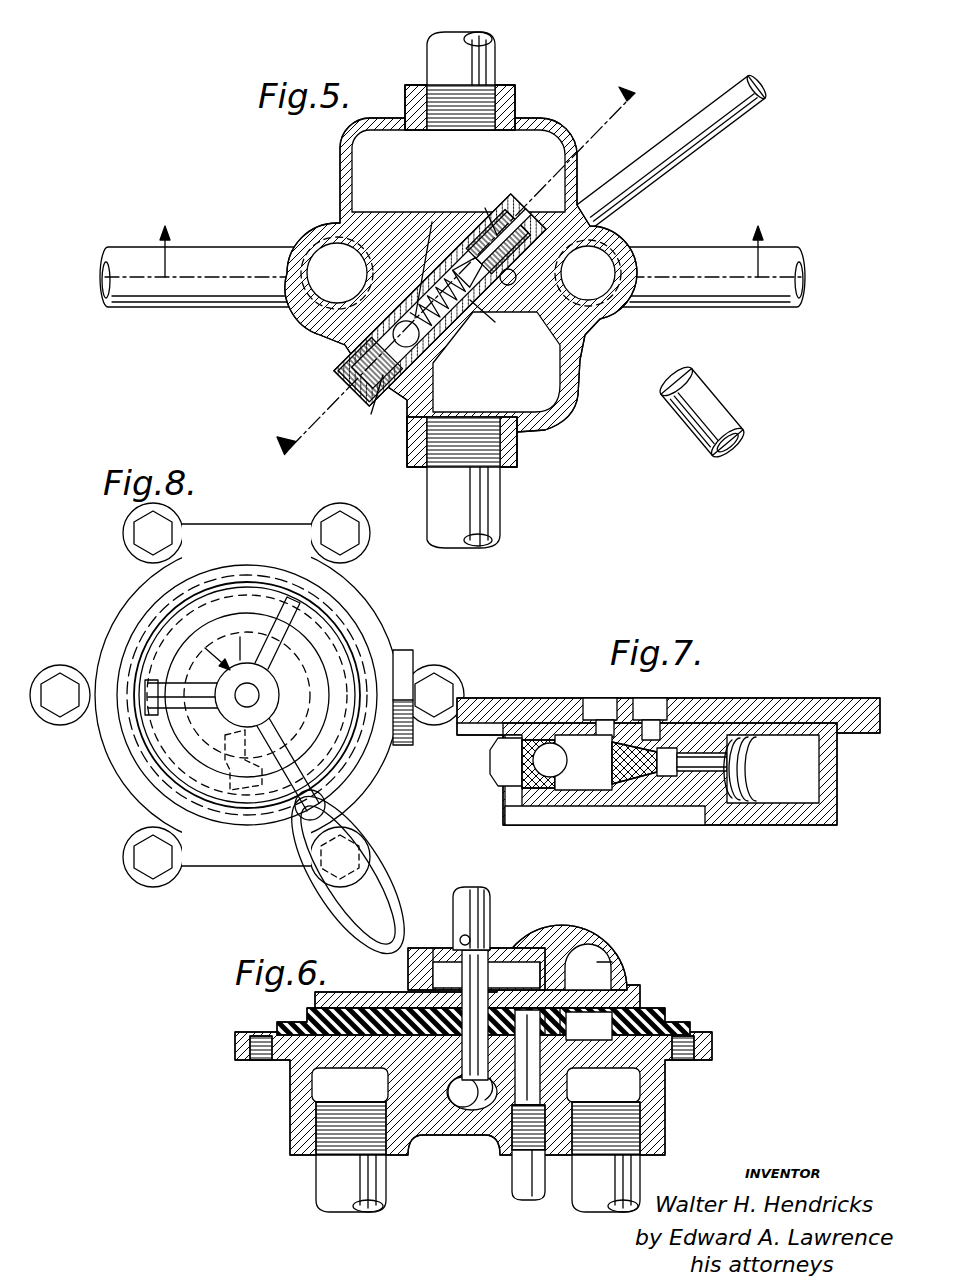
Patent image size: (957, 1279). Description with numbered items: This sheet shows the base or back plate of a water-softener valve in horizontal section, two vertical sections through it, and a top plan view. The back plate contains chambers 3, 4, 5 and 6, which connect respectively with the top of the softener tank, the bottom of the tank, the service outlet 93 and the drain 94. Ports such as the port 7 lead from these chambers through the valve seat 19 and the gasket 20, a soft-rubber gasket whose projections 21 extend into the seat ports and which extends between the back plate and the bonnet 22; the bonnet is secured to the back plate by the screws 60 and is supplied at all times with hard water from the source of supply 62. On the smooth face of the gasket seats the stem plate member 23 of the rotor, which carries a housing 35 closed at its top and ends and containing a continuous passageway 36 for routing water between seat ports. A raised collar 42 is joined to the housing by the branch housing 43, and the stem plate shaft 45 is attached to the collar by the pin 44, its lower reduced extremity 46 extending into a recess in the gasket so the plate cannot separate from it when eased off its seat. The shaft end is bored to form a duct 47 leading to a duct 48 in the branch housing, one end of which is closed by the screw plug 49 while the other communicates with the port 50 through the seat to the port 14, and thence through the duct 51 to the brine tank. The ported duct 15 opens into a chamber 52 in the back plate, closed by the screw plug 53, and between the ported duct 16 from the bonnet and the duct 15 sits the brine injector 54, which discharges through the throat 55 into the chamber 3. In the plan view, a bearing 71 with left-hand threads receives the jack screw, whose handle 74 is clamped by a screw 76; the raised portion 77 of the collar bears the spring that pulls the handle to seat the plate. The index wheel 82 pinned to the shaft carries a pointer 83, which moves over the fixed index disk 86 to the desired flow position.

In FIG. 5, the chamber 3 is at (458, 171).
In FIG. 7, the chamber 3 is at (771, 769).
In FIG. 5, the chamber 4 is at (530, 392).
In FIG. 5, the chamber 5 is at (368, 248).
In FIG. 6, the chamber 5 is at (330, 1082).
In FIG. 5, the chamber 6 is at (627, 222).
In FIG. 6, the chamber 6 is at (628, 1082).
In FIG. 5, the port 7 is at (446, 258).
In FIG. 6, the port 14 is at (498, 1108).
In FIG. 7, the ported duct 15 is at (660, 716).
In FIG. 6, the ported duct 15 is at (475, 1015).
In FIG. 7, the ported duct 16 is at (598, 718).
In FIG. 6, the valve seat 19 is at (700, 1034).
In FIG. 6, the gasket 20 is at (660, 1020).
In FIG. 6, the projections 21 is at (625, 1015).
In FIG. 8, the bonnet 22 is at (355, 612).
In FIG. 6, the stem plate member 23 is at (315, 1000).
In FIG. 6, the housing 35 is at (588, 960).
In FIG. 6, the continuous passageway 36 is at (612, 975).
In FIG. 6, the raised collar 42 is at (500, 936).
In FIG. 6, the branch housing 43 is at (522, 946).
In FIG. 6, the pin 44 is at (462, 932).
In FIG. 8, the stem plate shaft 45 is at (256, 695).
In FIG. 6, the stem plate shaft 45 is at (455, 902).
In FIG. 6, the lower reduced extremity 46 is at (486, 975).
In FIG. 6, the duct 47 is at (459, 940).
In FIG. 6, the duct 48 is at (600, 960).
In FIG. 6, the screw plug 49 is at (408, 972).
In FIG. 6, the port 50 is at (612, 995).
In FIG. 5, the duct 51 is at (688, 150).
In FIG. 6, the duct 51 is at (526, 1170).
In FIG. 5, the chamber 52 is at (418, 285).
In FIG. 7, the chamber 52 is at (613, 754).
In FIG. 6, the chamber 52 is at (465, 1104).
In FIG. 5, the screw plug 53 is at (397, 379).
In FIG. 7, the screw plug 53 is at (508, 770).
In FIG. 5, the brine injector 54 is at (475, 318).
In FIG. 7, the brine injector 54 is at (645, 786).
In FIG. 5, the throat 55 is at (487, 220).
In FIG. 7, the throat 55 is at (705, 772).
In FIG. 8, the screws 60 is at (337, 528).
In FIG. 5, the source of supply 62 is at (702, 411).
In FIG. 8, the source of supply 62 is at (406, 660).
In FIG. 8, the bearing 71 is at (400, 752).
In FIG. 8, the handle 74 is at (385, 862).
In FIG. 8, the screw 76 is at (232, 775).
In FIG. 8, the raised portion 77 is at (239, 636).
In FIG. 8, the index wheel 82 is at (362, 632).
In FIG. 8, the pointer 83 is at (201, 653).
In FIG. 8, the index disk 86 is at (178, 735).
In FIG. 5, the service outlet 93 is at (212, 300).
In FIG. 6, the service outlet 93 is at (336, 1170).
In FIG. 5, the drain 94 is at (762, 300).
In FIG. 6, the drain 94 is at (640, 1176).